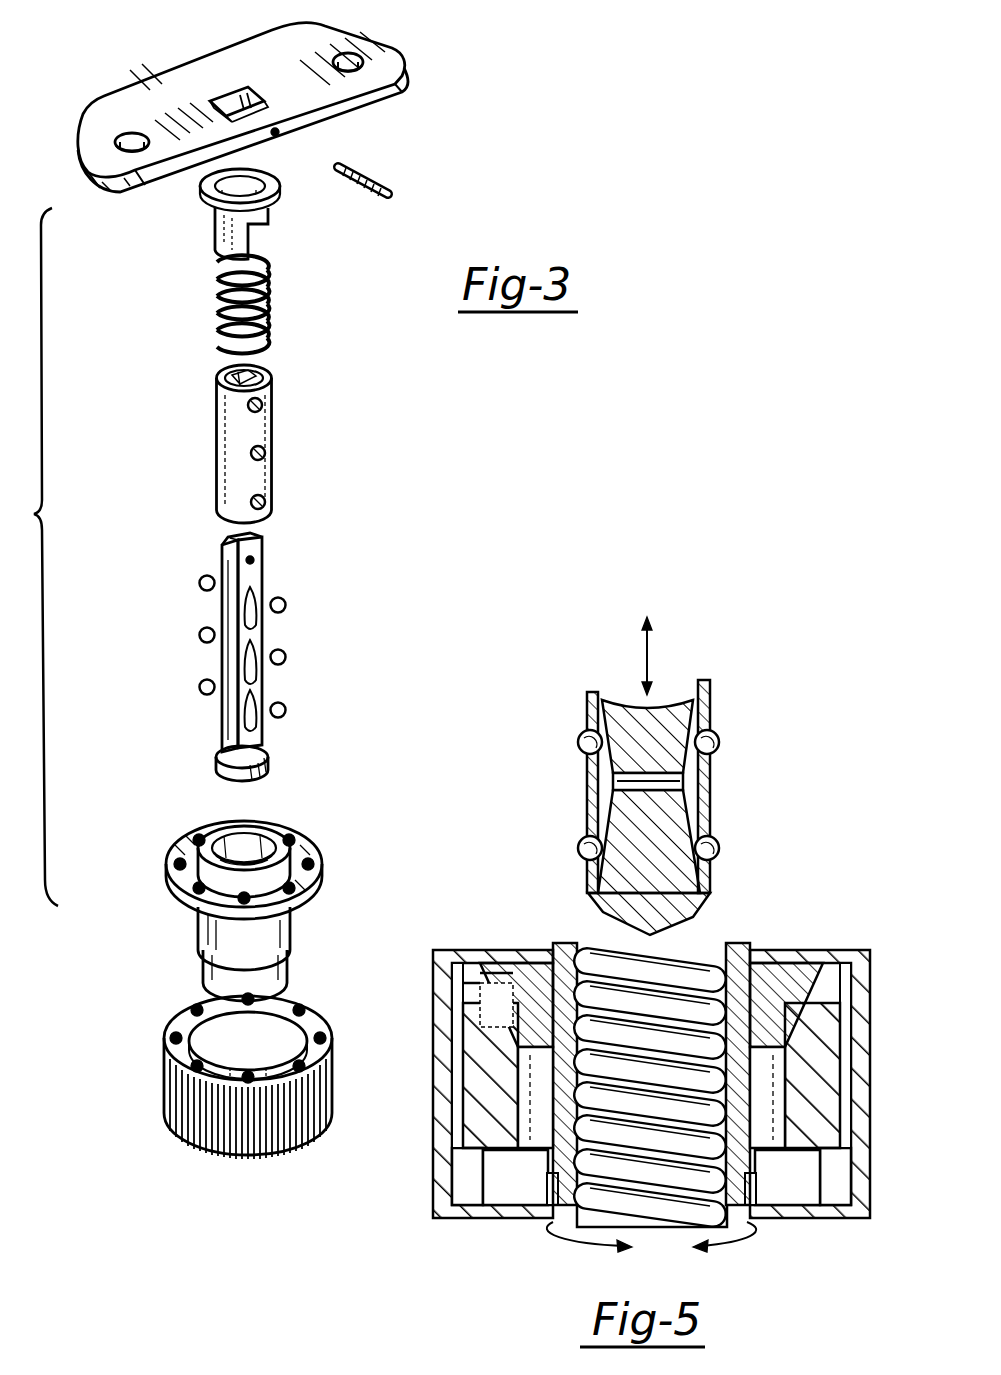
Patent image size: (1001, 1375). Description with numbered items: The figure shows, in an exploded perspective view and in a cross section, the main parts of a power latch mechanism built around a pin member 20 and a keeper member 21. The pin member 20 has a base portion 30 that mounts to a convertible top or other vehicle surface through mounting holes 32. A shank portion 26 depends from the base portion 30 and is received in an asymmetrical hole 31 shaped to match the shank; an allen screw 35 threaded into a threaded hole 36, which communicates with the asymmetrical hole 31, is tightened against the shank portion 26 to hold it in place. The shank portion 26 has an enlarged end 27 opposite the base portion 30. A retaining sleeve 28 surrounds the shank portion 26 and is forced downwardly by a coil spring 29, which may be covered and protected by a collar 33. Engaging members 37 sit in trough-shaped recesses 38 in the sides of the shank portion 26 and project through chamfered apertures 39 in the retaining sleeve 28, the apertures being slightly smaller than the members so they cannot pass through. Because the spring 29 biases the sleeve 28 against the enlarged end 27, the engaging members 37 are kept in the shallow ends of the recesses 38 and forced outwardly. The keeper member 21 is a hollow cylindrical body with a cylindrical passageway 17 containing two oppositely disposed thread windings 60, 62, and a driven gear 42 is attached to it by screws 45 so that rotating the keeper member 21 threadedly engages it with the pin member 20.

In FIG. 3, the cylindrical passageway 17 is at (262, 842).
In FIG. 3, the pin member 20 is at (320, 384).
In FIG. 3, the keeper member 21 is at (200, 922).
In FIG. 5, the keeper member 21 is at (762, 966).
In FIG. 3, the shank portion 26 is at (264, 570).
In FIG. 5, the shank portion 26 is at (660, 702).
In FIG. 3, the enlarged end 27 is at (270, 763).
In FIG. 5, the enlarged end 27 is at (704, 906).
In FIG. 3, the retaining sleeve 28 is at (216, 428).
In FIG. 5, the retaining sleeve 28 is at (712, 700).
In FIG. 3, the coil spring 29 is at (268, 295).
In FIG. 3, the base portion 30 is at (406, 72).
In FIG. 3, the asymmetrical hole 31 is at (237, 92).
In FIG. 3, the mounting holes 32 is at (126, 136).
In FIG. 3, the collar 33 is at (216, 220).
In FIG. 3, the allen screw 35 is at (392, 190).
In FIG. 3, the threaded hole 36 is at (282, 132).
In FIG. 3, the engaging members 37 is at (286, 606).
In FIG. 5, the engaging members 37 is at (721, 748).
In FIG. 3, the trough-shaped recesses 38 is at (258, 718).
In FIG. 5, the trough-shaped recesses 38 is at (694, 796).
In FIG. 3, the apertures 39 is at (266, 506).
In FIG. 3, the driven gear 42 is at (185, 1134).
In FIG. 5, the driven gear 42 is at (452, 1152).
In FIG. 5, the screws 45 is at (496, 982).
In FIG. 5, the thread winding 60 is at (556, 948).
In FIG. 5, the thread winding 62 is at (750, 940).